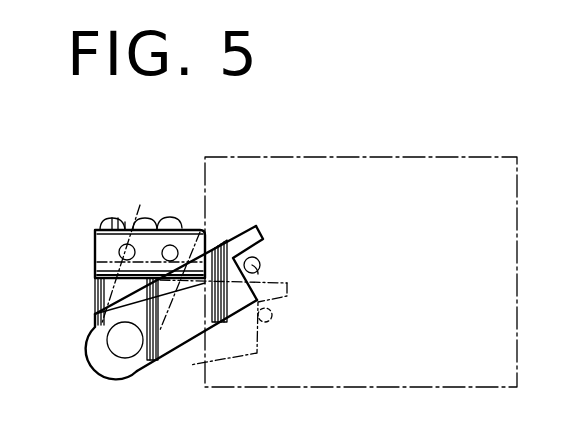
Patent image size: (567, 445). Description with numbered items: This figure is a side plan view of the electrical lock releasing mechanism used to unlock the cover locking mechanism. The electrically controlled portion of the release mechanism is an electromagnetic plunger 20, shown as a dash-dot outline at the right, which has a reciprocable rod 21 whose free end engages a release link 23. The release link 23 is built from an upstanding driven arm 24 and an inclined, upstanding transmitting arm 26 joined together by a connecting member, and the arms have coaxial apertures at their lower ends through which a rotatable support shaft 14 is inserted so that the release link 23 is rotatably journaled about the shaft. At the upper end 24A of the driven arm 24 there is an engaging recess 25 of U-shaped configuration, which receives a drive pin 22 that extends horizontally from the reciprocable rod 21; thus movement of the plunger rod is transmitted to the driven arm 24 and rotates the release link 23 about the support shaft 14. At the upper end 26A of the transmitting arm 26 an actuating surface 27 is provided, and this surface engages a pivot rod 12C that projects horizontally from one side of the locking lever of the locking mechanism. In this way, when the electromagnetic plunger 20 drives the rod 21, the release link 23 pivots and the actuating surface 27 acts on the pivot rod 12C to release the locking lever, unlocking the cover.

The electromagnetic plunger 20 is at (433, 165).
The driven arm 24 is at (95, 257).
The upper end of driven arm 24A is at (103, 218).
The engaging recess 25 is at (125, 222).
The drive pin 22 is at (140, 205).
The reciprocable rod 21 is at (182, 227).
The release link 23 is at (88, 299).
The transmitting arm 26 is at (180, 340).
The support shaft 14 is at (118, 350).
The actuating surface 27 is at (265, 247).
The pivot rod 12C is at (272, 297).
The upper end of transmitting arm 26A is at (260, 233).